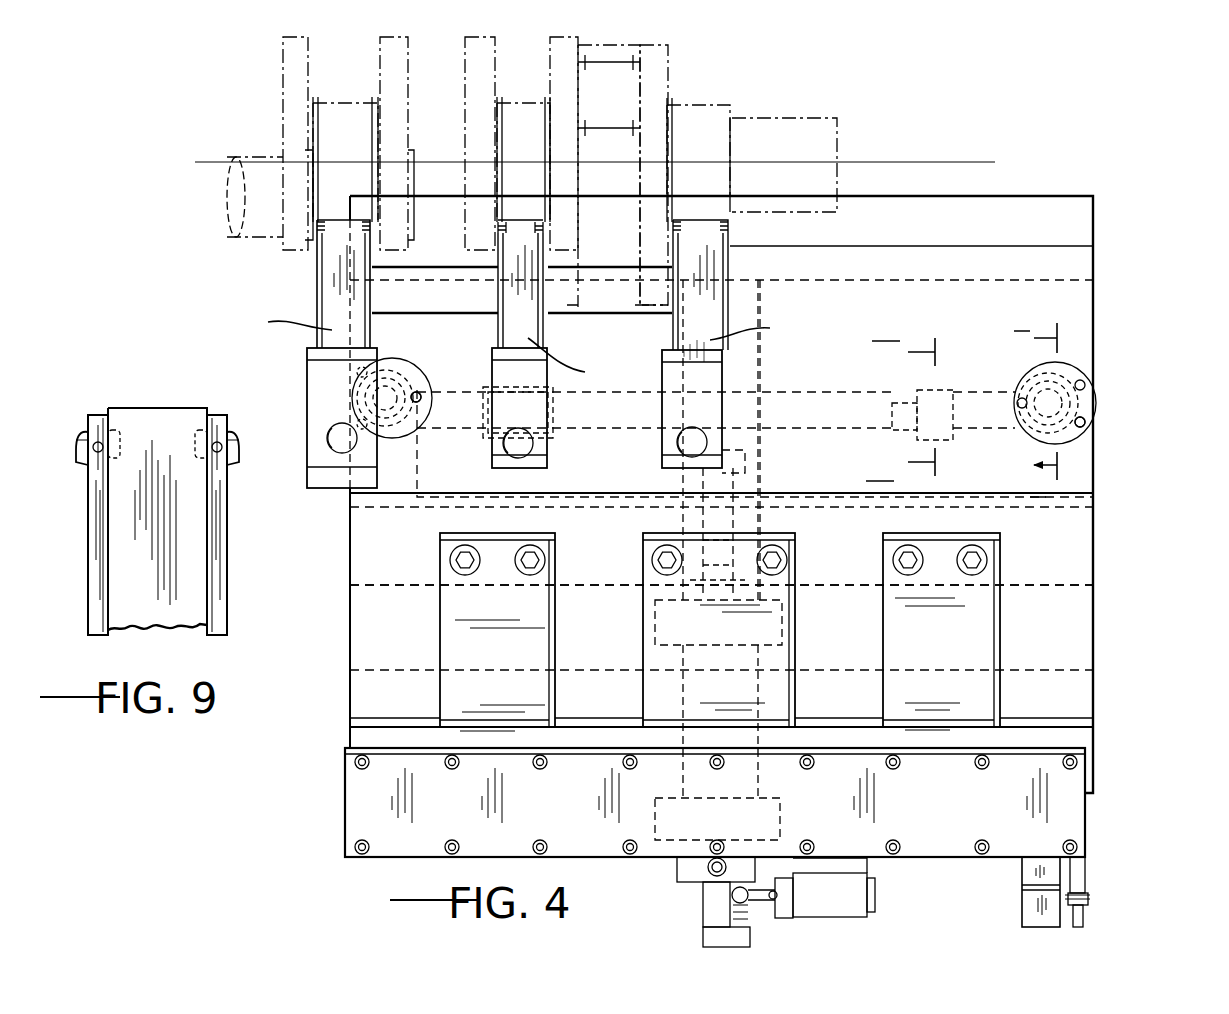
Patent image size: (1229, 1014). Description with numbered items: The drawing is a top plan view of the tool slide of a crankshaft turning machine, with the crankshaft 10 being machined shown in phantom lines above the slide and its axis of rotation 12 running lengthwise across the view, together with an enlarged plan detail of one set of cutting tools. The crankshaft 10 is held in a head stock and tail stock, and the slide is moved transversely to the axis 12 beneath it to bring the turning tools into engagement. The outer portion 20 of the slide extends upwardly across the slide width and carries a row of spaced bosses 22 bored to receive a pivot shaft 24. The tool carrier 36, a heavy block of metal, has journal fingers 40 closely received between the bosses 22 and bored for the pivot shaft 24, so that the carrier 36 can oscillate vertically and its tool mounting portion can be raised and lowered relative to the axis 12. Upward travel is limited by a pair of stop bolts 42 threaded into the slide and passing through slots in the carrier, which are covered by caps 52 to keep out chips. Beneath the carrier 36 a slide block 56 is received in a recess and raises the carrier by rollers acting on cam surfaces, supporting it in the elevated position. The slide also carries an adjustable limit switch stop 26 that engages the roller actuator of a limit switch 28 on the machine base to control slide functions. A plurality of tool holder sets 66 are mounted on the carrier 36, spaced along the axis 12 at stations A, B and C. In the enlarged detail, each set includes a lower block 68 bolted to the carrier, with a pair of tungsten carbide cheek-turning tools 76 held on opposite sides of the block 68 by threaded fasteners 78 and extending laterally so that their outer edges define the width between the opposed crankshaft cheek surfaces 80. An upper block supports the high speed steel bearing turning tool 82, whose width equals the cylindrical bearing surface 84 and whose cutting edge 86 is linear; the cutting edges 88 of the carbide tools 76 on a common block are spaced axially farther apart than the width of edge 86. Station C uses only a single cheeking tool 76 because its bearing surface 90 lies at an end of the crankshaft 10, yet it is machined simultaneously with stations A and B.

In FIG. 4, the crankshaft 10 is at (686, 76).
In FIG. 4, the axis of rotation 12 is at (900, 163).
In FIG. 4, the outer portion 20 is at (1068, 813).
In FIG. 4, the bosses 22 is at (516, 661).
In FIG. 4, the pivot shaft 24 is at (1062, 585).
In FIG. 4, the adjustable limit switch stop 26 is at (1090, 905).
In FIG. 4, the limit switch 28 is at (1028, 905).
In FIG. 4, the tool carrier 36 is at (1100, 328).
In FIG. 4, the fingers 40 is at (612, 574).
In FIG. 4, the stop bolts 42 is at (410, 447).
In FIG. 4, the caps 52 is at (410, 368).
In FIG. 4, the slide block 56 is at (813, 412).
In FIG. 4, the tool holder sets 66 is at (664, 328).
In FIG. 9, the lower block 68 is at (228, 528).
In FIG. 9, the crankshaft cheek-turning tools 76 is at (78, 450).
In FIG. 9, the threaded fasteners 78 is at (98, 412).
In FIG. 4, the crankshaft cheek surfaces 80 is at (382, 60).
In FIG. 9, the bearing turning tool 82 is at (152, 452).
In FIG. 4, the cylindrical bearing surface 84 is at (360, 104).
In FIG. 4, the cutting edge 86 is at (510, 216).
In FIG. 9, the cutting edge 86 is at (132, 409).
In FIG. 9, the cutting edges 88 is at (75, 437).
In FIG. 4, the bearing surface 90 is at (718, 103).